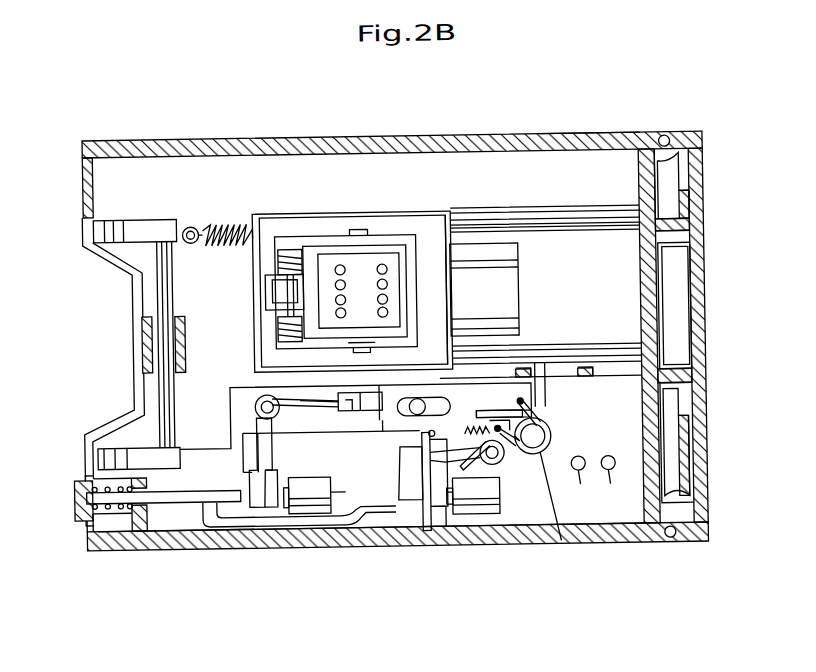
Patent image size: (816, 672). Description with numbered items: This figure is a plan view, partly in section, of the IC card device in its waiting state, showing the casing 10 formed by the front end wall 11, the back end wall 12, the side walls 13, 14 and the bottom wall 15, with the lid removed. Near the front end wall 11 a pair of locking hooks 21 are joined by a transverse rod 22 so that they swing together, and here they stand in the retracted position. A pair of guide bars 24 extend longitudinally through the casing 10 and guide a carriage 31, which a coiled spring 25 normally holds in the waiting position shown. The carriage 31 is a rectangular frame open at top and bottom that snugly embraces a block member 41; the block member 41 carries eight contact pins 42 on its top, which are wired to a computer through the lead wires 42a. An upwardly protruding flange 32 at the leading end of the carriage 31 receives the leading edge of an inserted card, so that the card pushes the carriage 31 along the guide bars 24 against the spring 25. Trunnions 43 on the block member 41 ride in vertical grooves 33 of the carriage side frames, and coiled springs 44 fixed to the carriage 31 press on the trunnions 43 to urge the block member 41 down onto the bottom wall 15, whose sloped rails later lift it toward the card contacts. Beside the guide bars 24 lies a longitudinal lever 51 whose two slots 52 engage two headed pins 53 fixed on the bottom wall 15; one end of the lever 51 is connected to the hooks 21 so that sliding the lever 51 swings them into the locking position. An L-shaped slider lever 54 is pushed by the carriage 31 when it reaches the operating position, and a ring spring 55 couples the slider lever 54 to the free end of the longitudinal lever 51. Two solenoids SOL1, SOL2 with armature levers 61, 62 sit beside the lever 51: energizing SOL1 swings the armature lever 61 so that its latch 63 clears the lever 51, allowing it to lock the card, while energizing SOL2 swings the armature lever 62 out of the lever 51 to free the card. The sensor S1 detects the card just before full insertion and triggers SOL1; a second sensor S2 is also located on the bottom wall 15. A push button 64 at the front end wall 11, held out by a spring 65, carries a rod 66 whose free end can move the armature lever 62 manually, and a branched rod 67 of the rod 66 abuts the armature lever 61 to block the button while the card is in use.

The casing 10 is at (539, 128).
The front end wall 11 is at (81, 187).
The back end wall 12 is at (696, 188).
The side wall 13 is at (594, 140).
The side wall 14 is at (598, 536).
The bottom wall 15 is at (488, 160).
The locking hooks 21 is at (148, 221).
The transverse rod 22 is at (156, 292).
The guide bars 24 is at (578, 370).
The coiled spring 25 is at (215, 228).
The carriage 31 is at (313, 217).
The flange 32 is at (445, 220).
The vertical grooves 33 is at (350, 355).
The block member 41 is at (378, 266).
The contact pins 42 is at (338, 272).
The lead wires 42a is at (483, 292).
The trunnions 43 is at (358, 234).
The coiled springs 44 is at (288, 253).
The longitudinal lever 51 is at (407, 438).
The slots 52 is at (236, 510).
The headed pins 53 is at (294, 517).
The L-shaped slider lever 54 is at (541, 406).
The ring spring 55 is at (543, 462).
The armature lever 61 is at (466, 520).
The armature lever 62 is at (260, 512).
The latch 63 is at (413, 475).
The push button 64 is at (72, 494).
The spring 65 is at (117, 532).
The rod 66 is at (175, 506).
The branched rod 67 is at (208, 531).
The solenoid SOL1 is at (472, 520).
The solenoid SOL2 is at (324, 518).
The sensor S1 is at (582, 483).
The sensor S2 is at (615, 482).